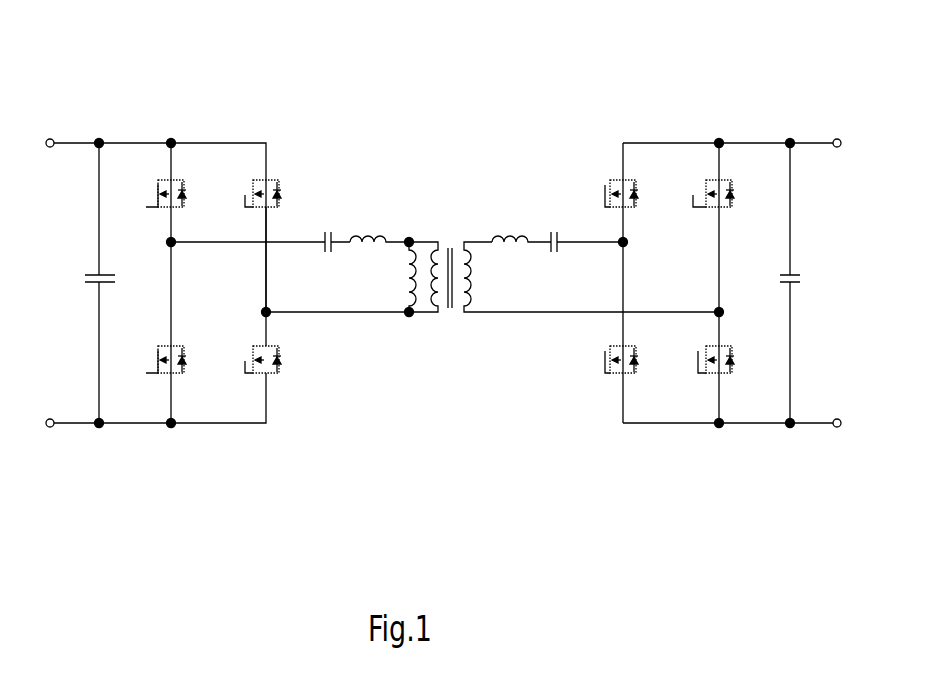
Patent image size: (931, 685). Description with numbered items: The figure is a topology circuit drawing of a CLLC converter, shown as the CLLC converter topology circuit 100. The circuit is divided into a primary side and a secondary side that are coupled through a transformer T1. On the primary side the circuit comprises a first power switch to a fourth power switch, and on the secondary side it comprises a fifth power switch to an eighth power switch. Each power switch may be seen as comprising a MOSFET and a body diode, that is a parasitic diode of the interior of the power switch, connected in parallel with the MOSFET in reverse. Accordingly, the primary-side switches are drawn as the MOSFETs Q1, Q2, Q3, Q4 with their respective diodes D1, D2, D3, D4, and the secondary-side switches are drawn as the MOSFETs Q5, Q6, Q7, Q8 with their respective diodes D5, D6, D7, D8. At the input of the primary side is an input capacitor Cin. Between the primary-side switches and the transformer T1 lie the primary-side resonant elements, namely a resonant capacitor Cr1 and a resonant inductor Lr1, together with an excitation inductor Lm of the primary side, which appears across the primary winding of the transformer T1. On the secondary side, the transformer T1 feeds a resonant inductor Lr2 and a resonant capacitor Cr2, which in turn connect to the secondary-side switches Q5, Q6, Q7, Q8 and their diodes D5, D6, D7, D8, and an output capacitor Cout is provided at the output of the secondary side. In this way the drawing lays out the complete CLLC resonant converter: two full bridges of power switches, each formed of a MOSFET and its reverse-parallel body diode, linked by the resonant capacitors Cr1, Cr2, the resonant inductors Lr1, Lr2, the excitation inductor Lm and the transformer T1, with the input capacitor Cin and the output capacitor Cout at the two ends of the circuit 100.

The CLLC converter topology circuit 100 is at (415, 73).
The input capacitor Cin is at (81, 283).
The output capacitor Cout is at (815, 277).
The MOSFET Q1 is at (148, 197).
The MOSFET Q2 is at (150, 361).
The MOSFET Q3 is at (249, 184).
The MOSFET Q4 is at (248, 380).
The MOSFET Q5 is at (606, 197).
The MOSFET Q6 is at (606, 361).
The MOSFET Q7 is at (705, 182).
The MOSFET Q8 is at (704, 379).
The diode D1 is at (195, 197).
The diode D2 is at (196, 361).
The diode D3 is at (292, 197).
The diode D4 is at (292, 361).
The diode D5 is at (649, 204).
The diode D6 is at (649, 361).
The diode D7 is at (746, 197).
The diode D8 is at (746, 361).
The resonant capacitor Cr1 is at (260, 262).
The resonant inductor Lr1 is at (379, 219).
The excitation inductor Lm is at (398, 277).
The transformer T1 is at (492, 263).
The resonant inductor Lr2 is at (521, 220).
The resonant capacitor Cr2 is at (580, 225).